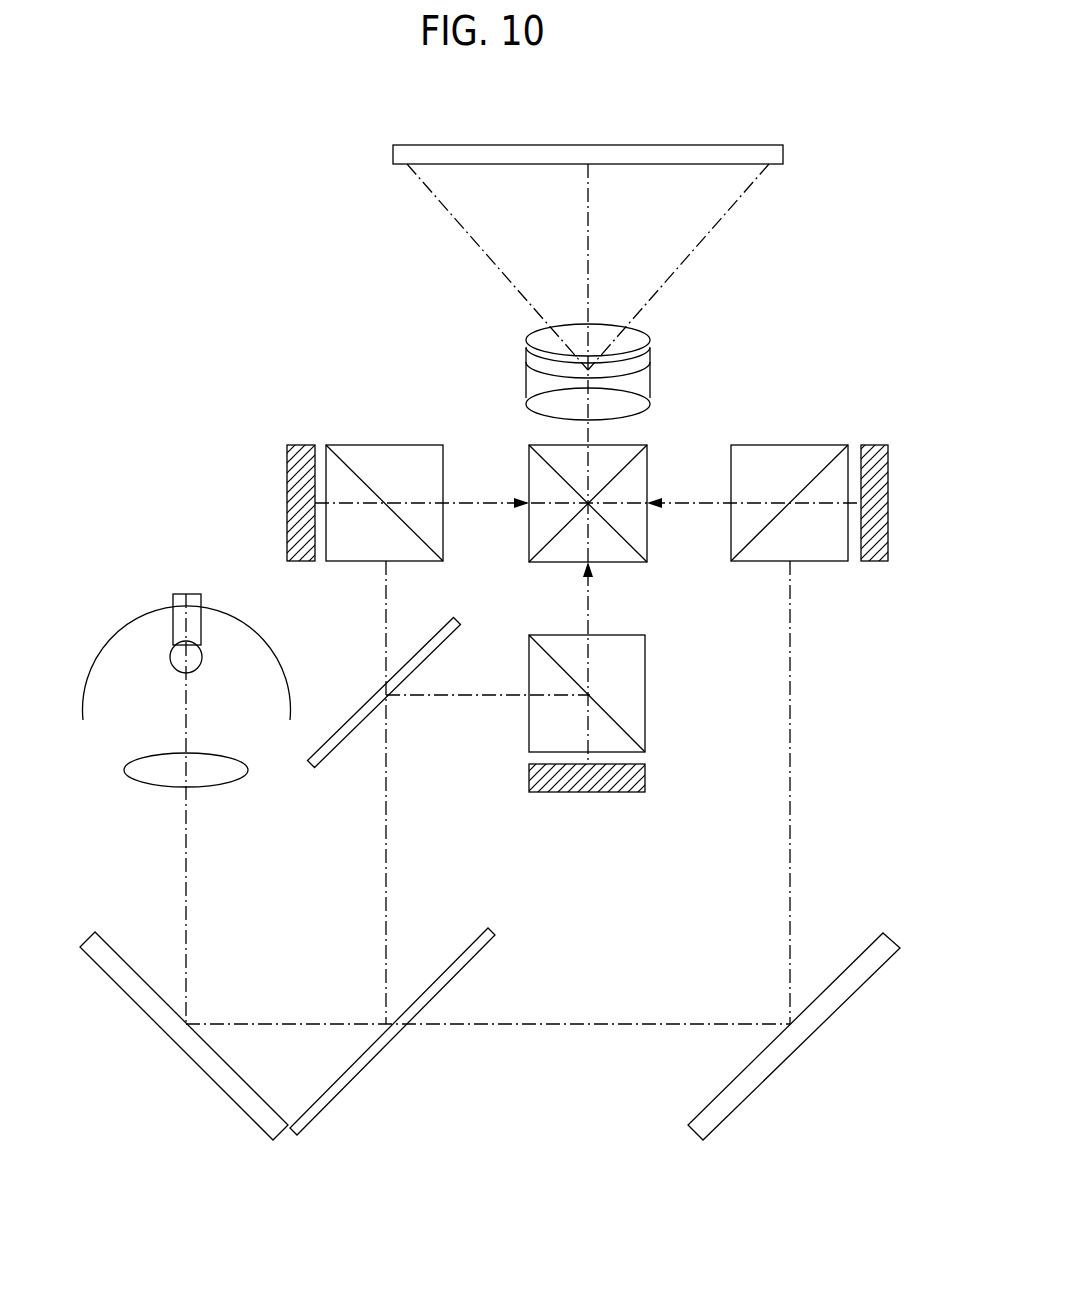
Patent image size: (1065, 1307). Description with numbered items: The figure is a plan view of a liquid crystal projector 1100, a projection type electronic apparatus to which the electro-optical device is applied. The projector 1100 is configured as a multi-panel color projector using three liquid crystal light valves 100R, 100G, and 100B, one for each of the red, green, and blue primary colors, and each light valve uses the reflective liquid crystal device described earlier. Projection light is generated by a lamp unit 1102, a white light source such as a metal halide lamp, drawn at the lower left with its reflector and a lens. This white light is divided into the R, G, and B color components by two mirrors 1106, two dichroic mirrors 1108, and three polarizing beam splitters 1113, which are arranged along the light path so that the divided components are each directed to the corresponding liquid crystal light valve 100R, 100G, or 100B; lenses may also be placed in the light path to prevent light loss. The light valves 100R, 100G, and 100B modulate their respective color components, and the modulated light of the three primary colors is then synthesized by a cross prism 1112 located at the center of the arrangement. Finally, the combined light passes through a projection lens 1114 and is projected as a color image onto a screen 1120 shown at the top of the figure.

The liquid crystal projector 1100 is at (324, 118).
The screen 1120 is at (718, 152).
The projection lens 1114 is at (515, 422).
The cross prism 1112 is at (615, 452).
The polarizing beam splitter 1113 is at (378, 460).
The liquid crystal light valve 100B is at (305, 555).
The liquid crystal light valve 100R is at (880, 555).
The liquid crystal light valve 100G is at (605, 790).
The lamp unit 1102 is at (103, 663).
The dichroic mirror 1108 is at (338, 738).
The mirror 1106 is at (192, 1045).